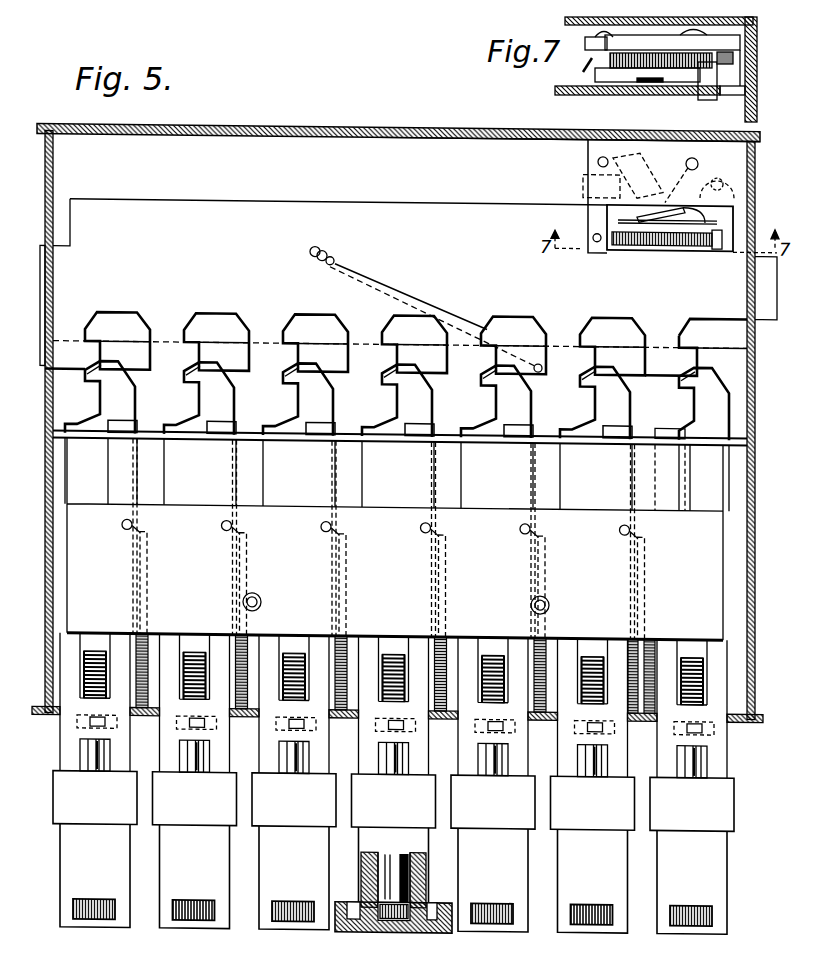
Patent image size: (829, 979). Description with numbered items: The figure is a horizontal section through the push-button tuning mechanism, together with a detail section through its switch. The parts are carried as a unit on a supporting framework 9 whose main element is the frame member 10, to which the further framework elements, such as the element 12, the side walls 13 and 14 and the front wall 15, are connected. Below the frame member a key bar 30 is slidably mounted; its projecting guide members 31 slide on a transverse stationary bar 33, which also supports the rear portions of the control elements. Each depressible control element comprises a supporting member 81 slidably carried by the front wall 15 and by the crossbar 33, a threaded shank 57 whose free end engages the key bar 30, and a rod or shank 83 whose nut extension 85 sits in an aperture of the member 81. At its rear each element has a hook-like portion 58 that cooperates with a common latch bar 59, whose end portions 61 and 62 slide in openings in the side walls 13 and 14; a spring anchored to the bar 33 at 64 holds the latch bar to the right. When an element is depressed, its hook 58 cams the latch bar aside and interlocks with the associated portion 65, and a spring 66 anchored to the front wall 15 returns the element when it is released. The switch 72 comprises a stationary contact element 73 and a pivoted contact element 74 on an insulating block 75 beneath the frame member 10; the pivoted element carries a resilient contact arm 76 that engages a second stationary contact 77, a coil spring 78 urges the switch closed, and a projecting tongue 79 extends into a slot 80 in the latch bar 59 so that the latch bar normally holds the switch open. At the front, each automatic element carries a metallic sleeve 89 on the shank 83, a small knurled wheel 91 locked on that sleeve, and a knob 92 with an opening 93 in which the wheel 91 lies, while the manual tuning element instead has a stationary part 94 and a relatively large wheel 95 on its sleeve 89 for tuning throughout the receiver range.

In FIG. 5, the supporting framework 9 is at (273, 125).
In FIG. 7, the frame member 10 is at (750, 22).
In FIG. 5, the framework element 12 is at (405, 124).
In FIG. 5, the side wall 13 is at (45, 463).
In FIG. 5, the side wall 14 is at (755, 489).
In FIG. 5, the front wall 15 is at (746, 715).
In FIG. 5, the key bar 30 is at (509, 500).
In FIG. 5, the guide member 31 is at (108, 466).
In FIG. 5, the transverse stationary bar 33 is at (721, 417).
In FIG. 5, the threaded shank 57 is at (84, 663).
In FIG. 5, the hook-like portion 58 is at (612, 379).
In FIG. 5, the latch bar 59 is at (452, 188).
In FIG. 7, the latch bar 59 is at (610, 93).
In FIG. 5, the end portion of latch bar 61 is at (42, 312).
In FIG. 5, the end portion of latch bar 62 is at (760, 312).
In FIG. 5, the spring anchorage 64 is at (538, 366).
In FIG. 5, the latch bar portion 65 is at (642, 316).
In FIG. 5, the spring 66 is at (148, 645).
In FIG. 5, the switch 72 is at (681, 180).
In FIG. 7, the switch 72 is at (658, 43).
In FIG. 5, the stationary contact element 73 is at (653, 190).
In FIG. 5, the pivoted contact element 74 is at (652, 214).
In FIG. 5, the insulating block 75 is at (588, 152).
In FIG. 7, the insulating block 75 is at (590, 50).
In FIG. 5, the resilient contact arm 76 is at (684, 232).
In FIG. 5, the second stationary contact 77 is at (583, 181).
In FIG. 5, the coil spring 78 is at (611, 241).
In FIG. 7, the coil spring 78 is at (630, 53).
In FIG. 5, the projecting tongue 79 is at (714, 240).
In FIG. 7, the projecting tongue 79 is at (708, 88).
In FIG. 7, the slot 80 is at (727, 90).
In FIG. 5, the supporting member 81 is at (126, 747).
In FIG. 5, the shank 83 is at (93, 752).
In FIG. 5, the nut extension 85 is at (90, 716).
In FIG. 5, the metallic sleeve 89 is at (364, 903).
In FIG. 5, the knurled wheel 91 is at (487, 919).
In FIG. 5, the knob 92 is at (513, 910).
In FIG. 5, the opening 93 is at (518, 886).
In FIG. 5, the stationary part 94 is at (427, 872).
In FIG. 5, the wheel 95 is at (417, 921).